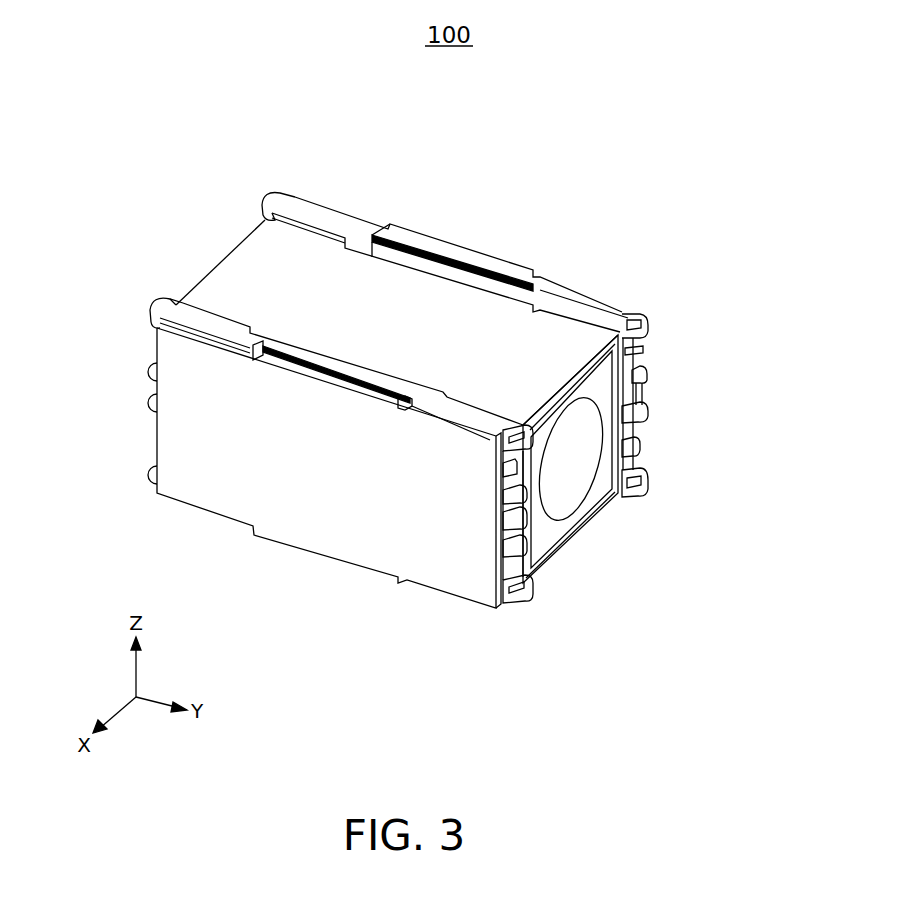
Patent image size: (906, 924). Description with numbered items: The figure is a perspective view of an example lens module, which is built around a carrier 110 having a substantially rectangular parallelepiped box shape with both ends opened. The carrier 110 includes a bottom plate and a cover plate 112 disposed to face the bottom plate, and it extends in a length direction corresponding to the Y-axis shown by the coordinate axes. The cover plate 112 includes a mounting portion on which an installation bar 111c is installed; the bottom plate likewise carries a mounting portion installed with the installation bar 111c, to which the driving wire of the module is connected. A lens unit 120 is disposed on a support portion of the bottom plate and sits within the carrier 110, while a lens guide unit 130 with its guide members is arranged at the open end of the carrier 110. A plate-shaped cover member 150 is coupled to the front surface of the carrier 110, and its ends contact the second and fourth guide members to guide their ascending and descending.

The carrier 110 is at (389, 309).
The cover plate 112 is at (423, 333).
The installation bar 111c is at (220, 332).
The lens unit 120 is at (608, 386).
The lens guide unit 130 is at (660, 420).
The cover member 150 is at (190, 443).